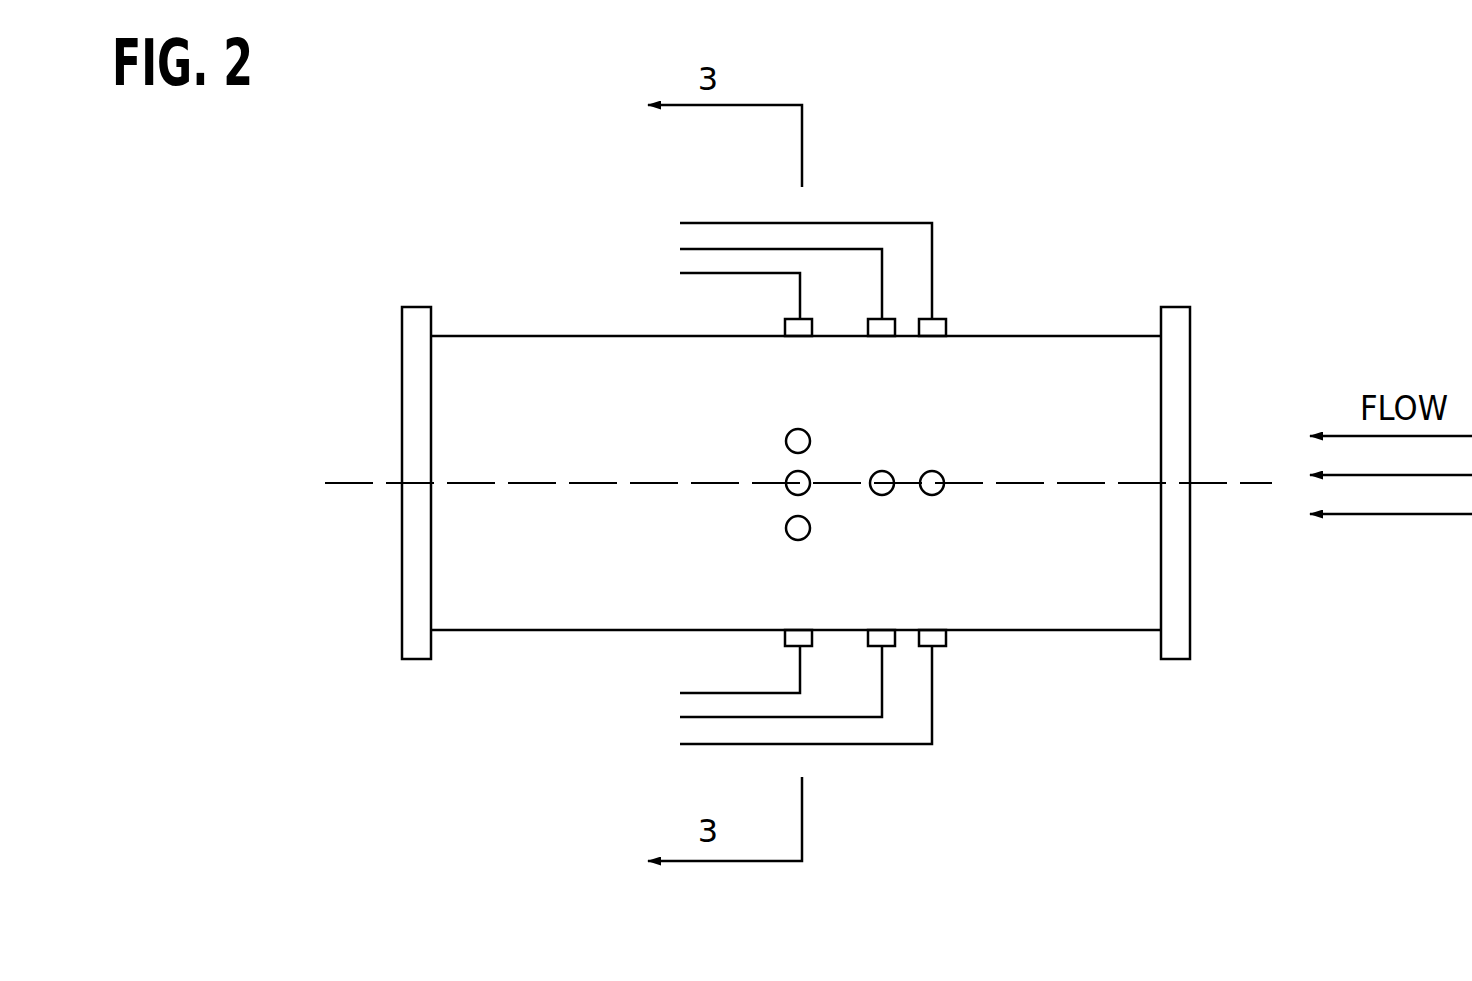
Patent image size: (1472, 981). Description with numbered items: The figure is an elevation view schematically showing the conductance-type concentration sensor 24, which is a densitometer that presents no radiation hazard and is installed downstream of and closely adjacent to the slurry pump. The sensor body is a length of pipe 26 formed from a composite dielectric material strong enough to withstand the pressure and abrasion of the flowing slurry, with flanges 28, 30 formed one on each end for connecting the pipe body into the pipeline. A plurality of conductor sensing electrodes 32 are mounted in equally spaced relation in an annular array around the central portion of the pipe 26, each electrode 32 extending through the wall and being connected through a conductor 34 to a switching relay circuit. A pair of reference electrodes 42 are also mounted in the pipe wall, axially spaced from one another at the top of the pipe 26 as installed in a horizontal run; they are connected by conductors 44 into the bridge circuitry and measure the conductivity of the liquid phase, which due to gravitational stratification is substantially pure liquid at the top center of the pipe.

The concentration sensor 24 is at (1237, 272).
The pipe 26 is at (607, 608).
The flange 28 is at (403, 410).
The flange 30 is at (1182, 413).
The conductor sensing electrodes 32 is at (792, 627).
The conductor 34 is at (720, 312).
The reference electrodes 42 is at (883, 627).
The conductors 44 is at (885, 270).